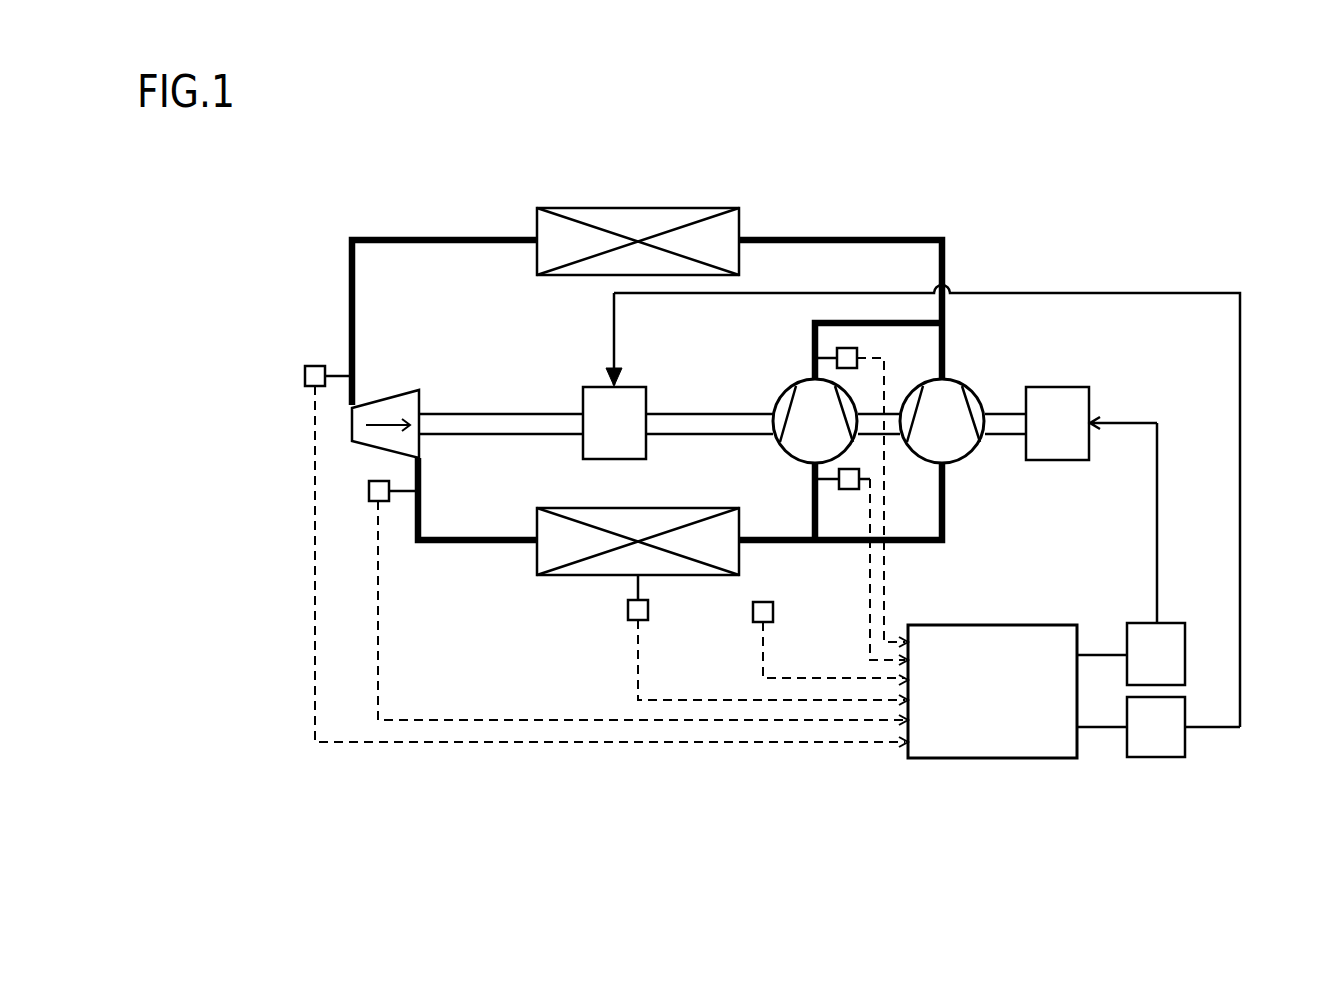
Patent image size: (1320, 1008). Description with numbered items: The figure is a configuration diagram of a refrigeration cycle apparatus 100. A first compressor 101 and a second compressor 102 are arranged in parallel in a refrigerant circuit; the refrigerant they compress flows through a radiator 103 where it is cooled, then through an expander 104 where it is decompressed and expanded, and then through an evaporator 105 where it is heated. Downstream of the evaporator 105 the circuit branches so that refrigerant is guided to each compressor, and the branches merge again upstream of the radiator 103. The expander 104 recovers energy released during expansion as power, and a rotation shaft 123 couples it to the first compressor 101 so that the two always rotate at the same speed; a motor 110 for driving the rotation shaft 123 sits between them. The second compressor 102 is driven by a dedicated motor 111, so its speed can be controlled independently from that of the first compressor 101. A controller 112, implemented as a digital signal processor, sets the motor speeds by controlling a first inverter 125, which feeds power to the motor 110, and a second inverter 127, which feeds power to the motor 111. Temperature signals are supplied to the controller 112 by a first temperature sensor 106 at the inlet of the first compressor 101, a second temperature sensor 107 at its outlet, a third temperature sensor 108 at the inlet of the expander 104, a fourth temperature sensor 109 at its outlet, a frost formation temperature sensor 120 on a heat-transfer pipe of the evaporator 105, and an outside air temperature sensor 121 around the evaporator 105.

The refrigeration cycle apparatus 100 is at (977, 130).
The first compressor 101 is at (790, 466).
The second compressor 102 is at (970, 465).
The radiator 103 is at (640, 205).
The expander 104 is at (388, 400).
The evaporator 105 is at (593, 577).
The first temperature sensor 106 is at (850, 490).
The second temperature sensor 107 is at (858, 356).
The third temperature sensor 108 is at (305, 373).
The fourth temperature sensor 109 is at (372, 504).
The motor 110 is at (618, 462).
The motor 111 is at (1061, 462).
The controller 112 is at (992, 760).
The frost formation temperature sensor 120 is at (650, 611).
The outside air temperature sensor 121 is at (775, 612).
The rotation shaft 123 is at (487, 436).
The first inverter 125 is at (1152, 759).
The second inverter 127 is at (1138, 623).